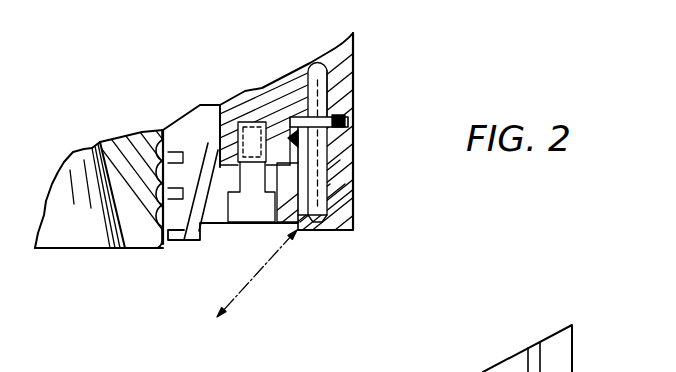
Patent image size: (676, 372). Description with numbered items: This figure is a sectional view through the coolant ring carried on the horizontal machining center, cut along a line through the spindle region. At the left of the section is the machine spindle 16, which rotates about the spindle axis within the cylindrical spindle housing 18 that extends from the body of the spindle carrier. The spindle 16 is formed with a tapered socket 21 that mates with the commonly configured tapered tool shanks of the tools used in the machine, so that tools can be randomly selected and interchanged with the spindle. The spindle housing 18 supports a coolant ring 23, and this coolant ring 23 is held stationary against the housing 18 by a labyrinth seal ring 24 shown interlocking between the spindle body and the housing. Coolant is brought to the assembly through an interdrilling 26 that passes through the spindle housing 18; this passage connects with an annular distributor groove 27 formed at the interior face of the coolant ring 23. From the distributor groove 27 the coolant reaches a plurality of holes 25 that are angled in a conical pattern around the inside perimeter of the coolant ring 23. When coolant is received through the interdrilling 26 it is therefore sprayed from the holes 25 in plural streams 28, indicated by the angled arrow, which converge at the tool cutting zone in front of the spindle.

The machine spindle 16 is at (142, 250).
The cylindrical spindle housing 18 is at (356, 72).
The tapered socket 21 is at (100, 225).
The coolant ring 23 is at (356, 177).
The labyrinth seal ring 24 is at (209, 224).
The holes 25 is at (303, 232).
The interdrilling 26 is at (323, 63).
The annular distributor groove 27 is at (292, 116).
The coolant streams 28 is at (240, 293).